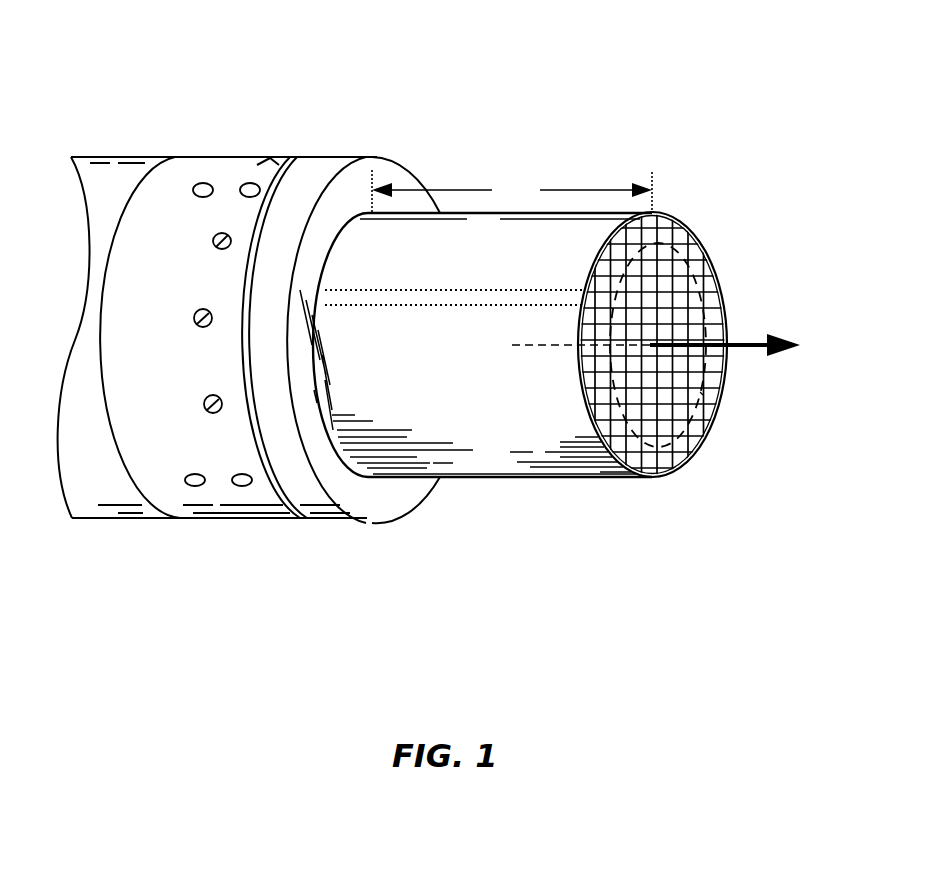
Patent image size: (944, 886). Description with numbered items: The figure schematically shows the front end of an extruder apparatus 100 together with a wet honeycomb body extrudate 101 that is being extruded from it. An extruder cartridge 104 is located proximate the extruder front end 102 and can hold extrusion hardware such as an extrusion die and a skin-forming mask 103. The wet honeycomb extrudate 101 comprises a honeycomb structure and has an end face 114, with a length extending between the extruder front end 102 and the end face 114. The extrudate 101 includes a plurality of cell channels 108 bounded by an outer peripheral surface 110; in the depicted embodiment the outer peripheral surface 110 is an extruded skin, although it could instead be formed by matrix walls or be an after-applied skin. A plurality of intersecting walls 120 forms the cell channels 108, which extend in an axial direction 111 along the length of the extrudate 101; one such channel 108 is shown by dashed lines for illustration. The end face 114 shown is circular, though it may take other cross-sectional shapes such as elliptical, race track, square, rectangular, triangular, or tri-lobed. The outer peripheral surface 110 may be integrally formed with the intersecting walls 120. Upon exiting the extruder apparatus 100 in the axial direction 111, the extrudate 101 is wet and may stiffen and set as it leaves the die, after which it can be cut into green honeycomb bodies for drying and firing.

The extruder apparatus 100 is at (241, 72).
The wet honeycomb body extrudate 101 is at (449, 492).
The extruder front end 102 is at (383, 151).
The skin-forming mask 103 is at (377, 495).
The extruder cartridge 104 is at (275, 520).
The cell channels 108 is at (497, 290).
The outer peripheral surface 110 is at (488, 433).
The axial direction 111 is at (762, 338).
The end face 114 is at (711, 252).
The intersecting walls 120 is at (710, 450).